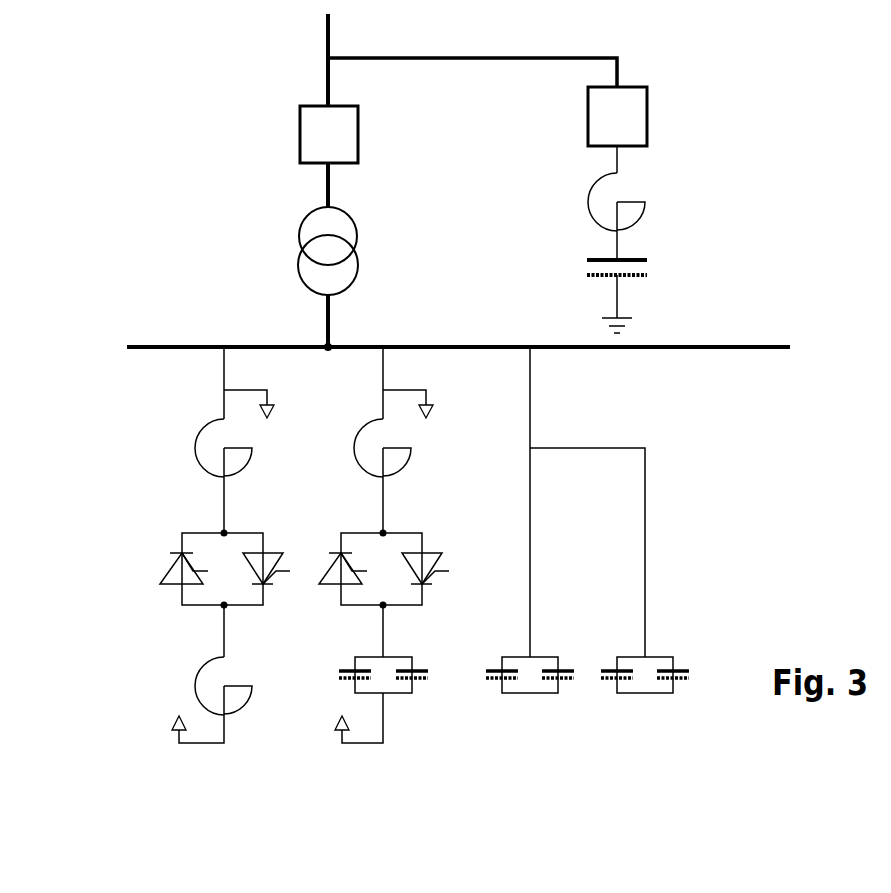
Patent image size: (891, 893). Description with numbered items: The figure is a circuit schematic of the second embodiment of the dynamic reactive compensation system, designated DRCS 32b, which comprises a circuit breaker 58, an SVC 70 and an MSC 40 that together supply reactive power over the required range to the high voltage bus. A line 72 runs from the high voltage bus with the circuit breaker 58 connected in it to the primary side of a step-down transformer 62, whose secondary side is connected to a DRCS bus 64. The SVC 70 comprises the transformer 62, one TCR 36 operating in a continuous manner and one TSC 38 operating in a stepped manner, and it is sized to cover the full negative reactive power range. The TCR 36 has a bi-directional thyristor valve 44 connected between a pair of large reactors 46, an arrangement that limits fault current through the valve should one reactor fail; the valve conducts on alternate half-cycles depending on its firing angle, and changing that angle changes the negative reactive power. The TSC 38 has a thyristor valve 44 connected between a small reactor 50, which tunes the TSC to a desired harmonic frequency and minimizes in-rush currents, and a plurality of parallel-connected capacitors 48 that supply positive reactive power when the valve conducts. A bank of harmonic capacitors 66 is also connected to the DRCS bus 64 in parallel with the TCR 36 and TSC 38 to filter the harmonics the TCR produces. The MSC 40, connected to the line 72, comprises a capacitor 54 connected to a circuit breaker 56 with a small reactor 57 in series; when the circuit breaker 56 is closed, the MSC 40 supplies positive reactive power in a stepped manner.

The line 72 is at (325, 88).
The DRCS 32b is at (198, 108).
The circuit breaker 58 is at (358, 145).
The step-down transformer 62 is at (370, 220).
The circuit breaker 56 is at (647, 130).
The small reactor 57 is at (584, 197).
The mechanically switched capacitor (MSC) 40 is at (616, 234).
The capacitor 54 is at (627, 278).
The DRCS bus 64 is at (472, 345).
The SVC 70 is at (138, 766).
The reactor 46 is at (185, 435).
The small reactor 50 is at (344, 435).
The bi-directional thyristor valve 44 is at (177, 522).
The capacitor 48 is at (402, 668).
The harmonic capacitor 66 is at (535, 657).
The thyristor controlled reactor (TCR) 36 is at (233, 800).
The thyristor switched capacitor (TSC) 38 is at (391, 800).